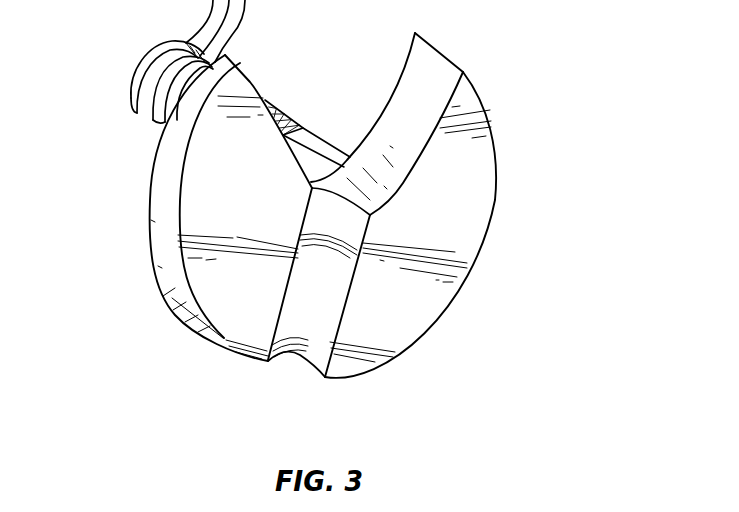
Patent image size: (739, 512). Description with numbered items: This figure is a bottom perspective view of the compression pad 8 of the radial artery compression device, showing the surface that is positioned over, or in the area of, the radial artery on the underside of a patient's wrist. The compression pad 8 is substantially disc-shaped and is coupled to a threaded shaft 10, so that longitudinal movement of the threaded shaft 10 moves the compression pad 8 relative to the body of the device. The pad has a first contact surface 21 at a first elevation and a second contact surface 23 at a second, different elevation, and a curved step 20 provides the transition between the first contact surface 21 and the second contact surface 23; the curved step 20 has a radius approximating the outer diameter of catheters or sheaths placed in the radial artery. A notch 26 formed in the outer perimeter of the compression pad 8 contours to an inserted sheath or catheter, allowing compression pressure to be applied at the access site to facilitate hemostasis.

The compression pad 8 is at (504, 82).
The threaded shaft 10 is at (128, 103).
The curved step 20 is at (307, 360).
The first contact surface 21 is at (216, 215).
The second contact surface 23 is at (467, 222).
The notch 26 is at (336, 101).